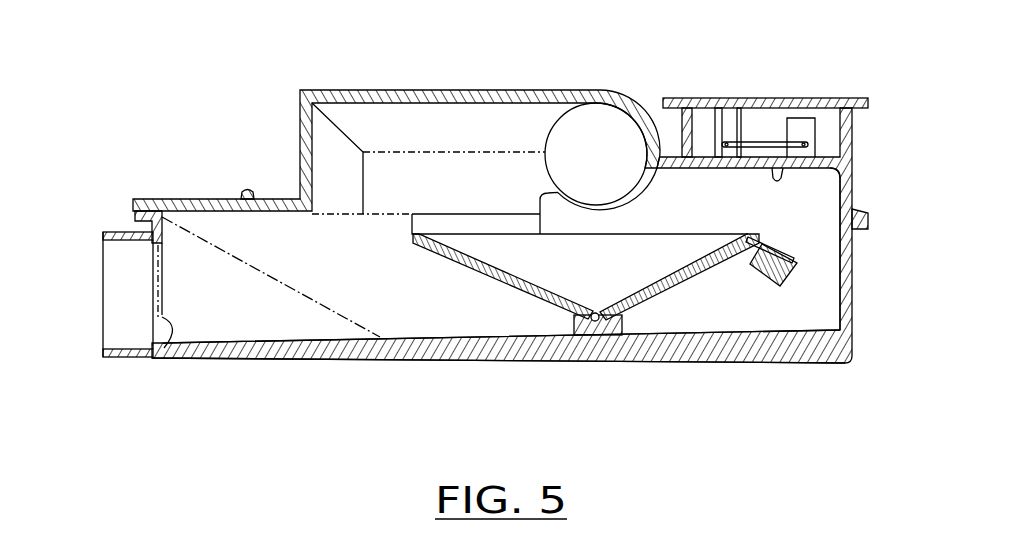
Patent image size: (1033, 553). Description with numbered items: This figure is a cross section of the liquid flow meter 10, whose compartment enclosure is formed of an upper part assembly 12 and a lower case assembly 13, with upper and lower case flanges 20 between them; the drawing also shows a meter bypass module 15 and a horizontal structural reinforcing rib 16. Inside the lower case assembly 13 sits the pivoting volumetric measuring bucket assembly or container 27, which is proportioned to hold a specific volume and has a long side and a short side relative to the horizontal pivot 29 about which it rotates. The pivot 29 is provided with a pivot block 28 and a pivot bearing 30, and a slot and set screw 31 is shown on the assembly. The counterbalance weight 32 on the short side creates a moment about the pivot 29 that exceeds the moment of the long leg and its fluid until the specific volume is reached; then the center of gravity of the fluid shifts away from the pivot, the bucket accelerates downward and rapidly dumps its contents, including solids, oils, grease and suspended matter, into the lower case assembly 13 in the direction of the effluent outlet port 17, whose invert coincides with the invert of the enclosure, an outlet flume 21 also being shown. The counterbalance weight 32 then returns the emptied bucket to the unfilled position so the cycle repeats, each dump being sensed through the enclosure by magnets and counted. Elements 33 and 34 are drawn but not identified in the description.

The liquid flow meter 10 is at (771, 98).
The upper part assembly 12 is at (852, 182).
The lower case assembly 13 is at (852, 288).
The meter bypass module 15 is at (448, 92).
The horizontal structural reinforcing rib 16 is at (245, 190).
The effluent outlet port 17 is at (103, 355).
The upper and lower case flanges 20 is at (868, 212).
The outlet flume 21 is at (240, 288).
The pivoting volumetric measuring bucket assembly 27 is at (490, 280).
The pivot block 28 is at (620, 315).
The pivot 29 is at (598, 324).
The pivot bearing 30 is at (588, 322).
The slot and set screw 31 is at (793, 258).
The counterbalance weight 32 is at (760, 277).
The bottom wall 33 is at (713, 337).
The plate 34 is at (481, 225).